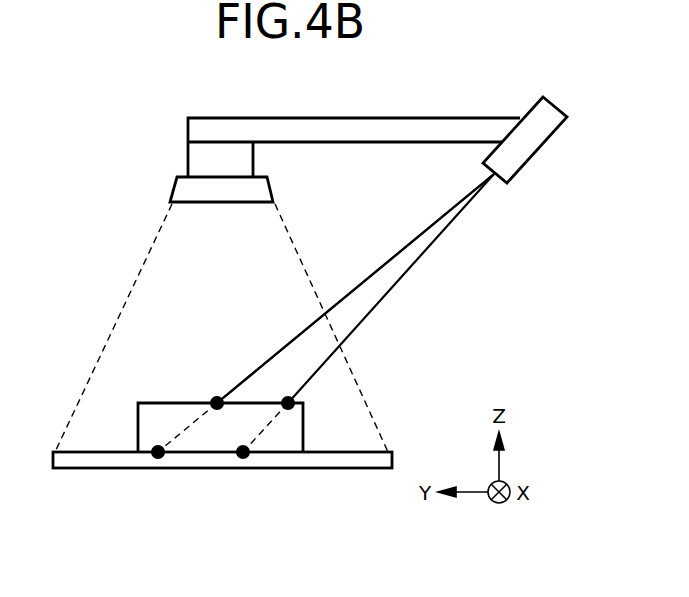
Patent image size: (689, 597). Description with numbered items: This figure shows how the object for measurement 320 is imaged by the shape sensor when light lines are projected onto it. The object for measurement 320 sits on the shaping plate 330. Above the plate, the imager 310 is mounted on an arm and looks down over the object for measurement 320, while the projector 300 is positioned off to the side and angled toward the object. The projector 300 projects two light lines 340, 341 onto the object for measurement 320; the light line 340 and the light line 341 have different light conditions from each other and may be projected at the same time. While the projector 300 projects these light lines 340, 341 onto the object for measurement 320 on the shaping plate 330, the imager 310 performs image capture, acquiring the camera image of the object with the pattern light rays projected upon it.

The projector 300 is at (557, 100).
The imager 310 is at (188, 158).
The object for measurement 320 is at (211, 445).
The shaping plate 330 is at (85, 473).
The light line 340 is at (412, 268).
The light line 341 is at (300, 330).